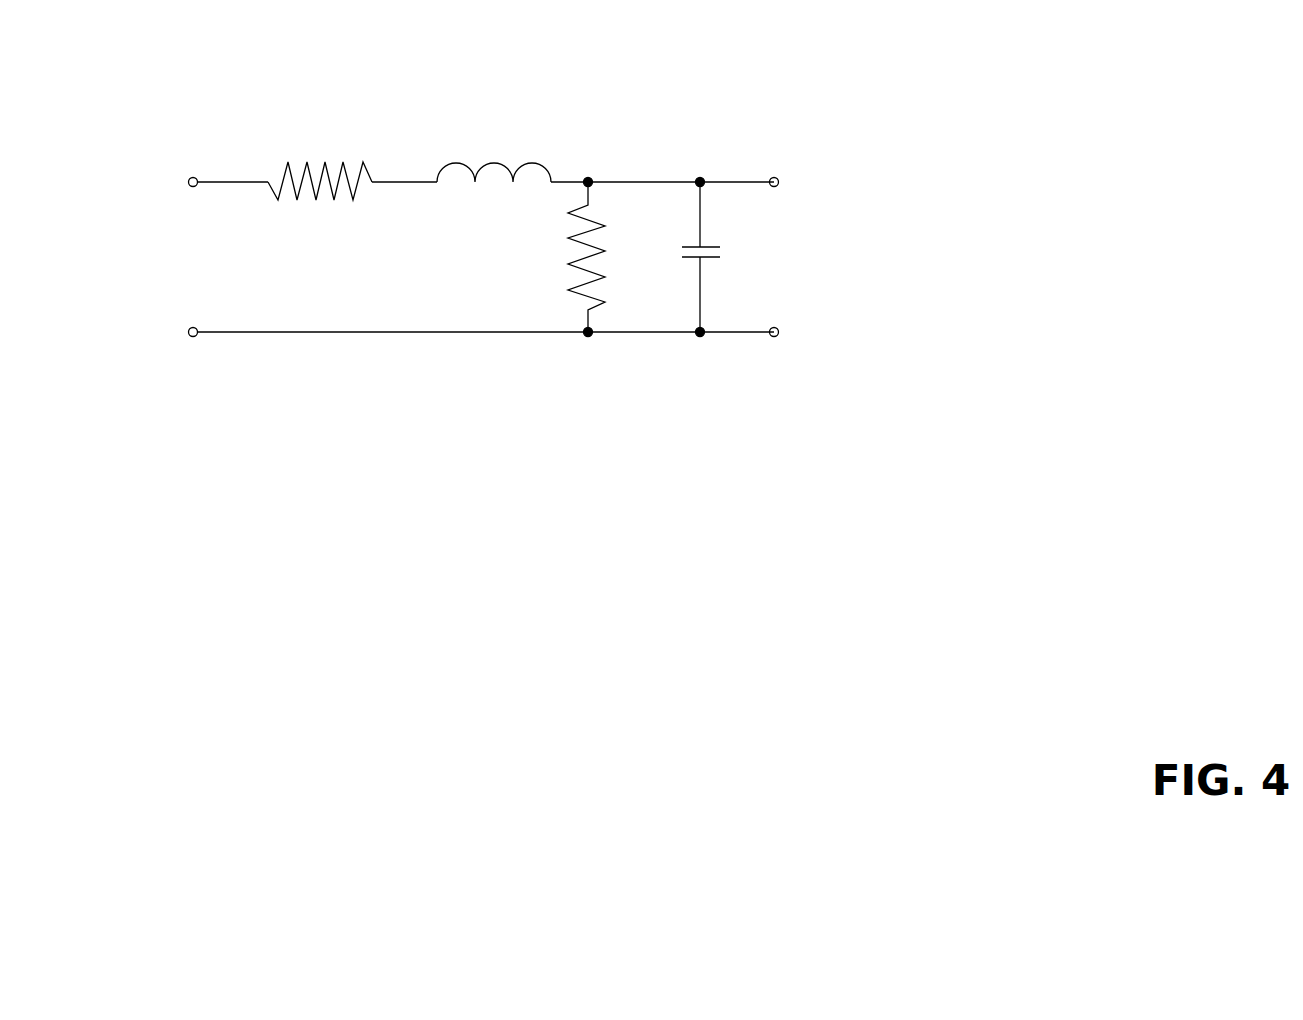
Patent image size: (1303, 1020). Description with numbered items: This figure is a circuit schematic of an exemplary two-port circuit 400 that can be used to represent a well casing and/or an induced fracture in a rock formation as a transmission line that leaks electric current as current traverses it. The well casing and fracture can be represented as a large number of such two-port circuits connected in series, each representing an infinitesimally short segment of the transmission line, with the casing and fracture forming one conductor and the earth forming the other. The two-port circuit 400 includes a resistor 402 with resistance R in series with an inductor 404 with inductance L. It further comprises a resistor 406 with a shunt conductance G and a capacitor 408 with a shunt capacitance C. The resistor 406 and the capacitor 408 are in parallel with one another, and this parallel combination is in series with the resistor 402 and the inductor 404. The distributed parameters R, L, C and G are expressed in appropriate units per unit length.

The two-port circuit 400 is at (1015, 67).
The resistor 402 is at (263, 125).
The inductor 404 is at (475, 125).
The resistor 406 is at (526, 275).
The capacitor 408 is at (758, 270).